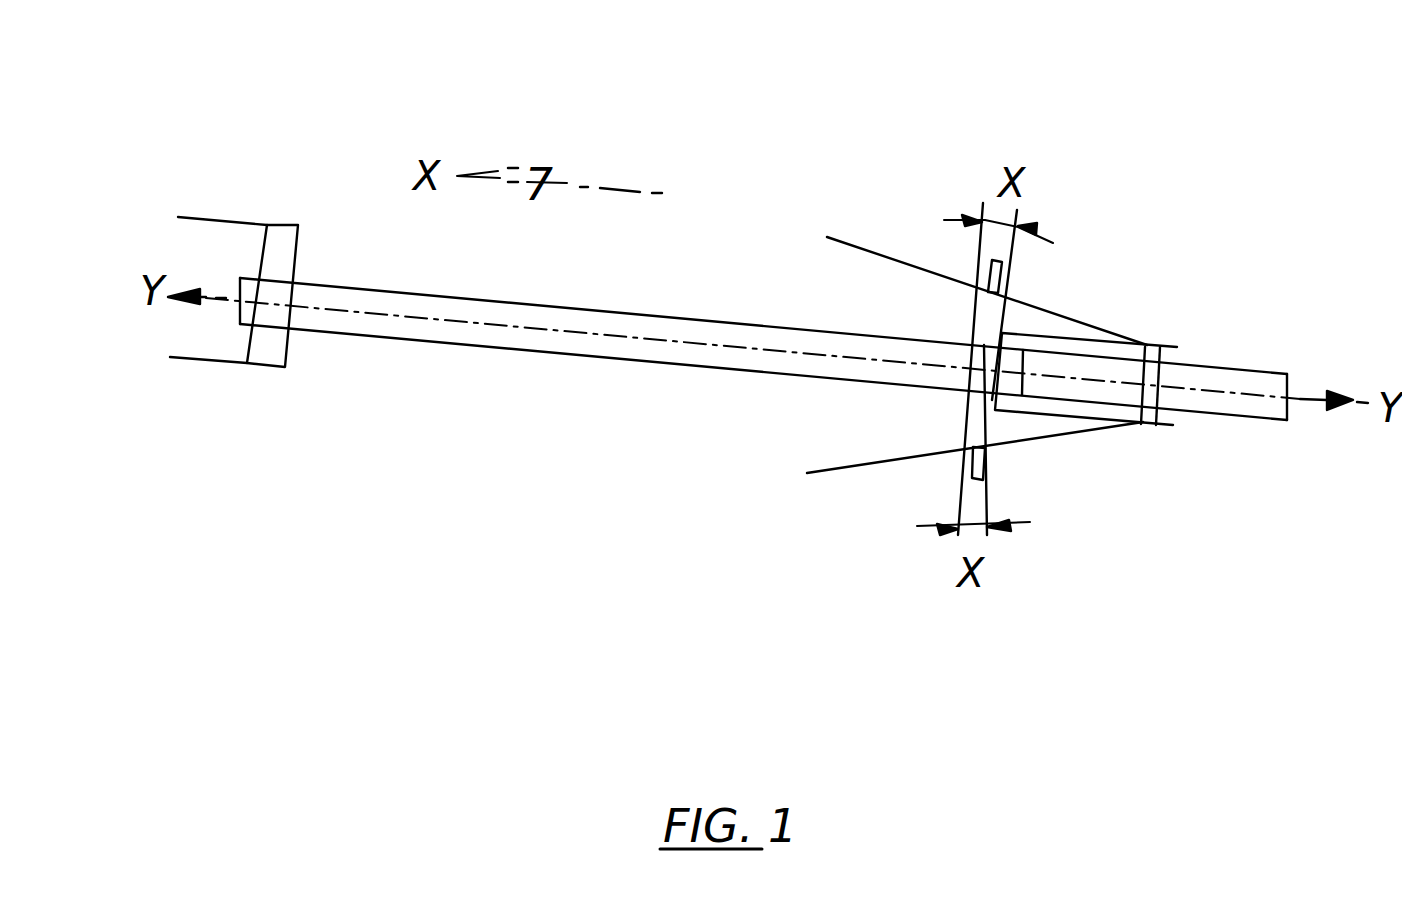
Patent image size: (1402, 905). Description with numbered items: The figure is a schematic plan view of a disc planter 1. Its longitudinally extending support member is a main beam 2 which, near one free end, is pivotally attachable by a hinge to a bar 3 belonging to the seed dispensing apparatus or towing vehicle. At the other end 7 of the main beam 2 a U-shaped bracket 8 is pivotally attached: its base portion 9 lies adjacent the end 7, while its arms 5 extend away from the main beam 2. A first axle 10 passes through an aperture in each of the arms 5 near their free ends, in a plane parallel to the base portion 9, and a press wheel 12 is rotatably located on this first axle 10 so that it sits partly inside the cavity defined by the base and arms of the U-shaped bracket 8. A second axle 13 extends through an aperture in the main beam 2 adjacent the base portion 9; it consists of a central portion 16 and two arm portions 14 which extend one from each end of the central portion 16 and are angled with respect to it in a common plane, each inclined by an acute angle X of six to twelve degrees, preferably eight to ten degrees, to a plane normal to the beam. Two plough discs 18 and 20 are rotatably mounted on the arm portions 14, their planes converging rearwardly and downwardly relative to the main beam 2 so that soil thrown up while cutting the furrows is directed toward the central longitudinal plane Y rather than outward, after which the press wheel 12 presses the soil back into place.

The disc planter 1 is at (521, 468).
The main beam 2 is at (450, 338).
The bar 3 is at (215, 366).
The arms 5 is at (1157, 350).
The other end 7 is at (1023, 363).
The U-shaped bracket 8 is at (1160, 427).
The base portion 9 is at (980, 333).
The first axle 10 is at (1212, 366).
The press wheel 12 is at (1233, 417).
The second axle 13 is at (967, 508).
The arm portions 14 is at (1003, 285).
The central portion 16 is at (967, 367).
The plough disc 18 is at (826, 468).
The plough disc 20 is at (883, 252).